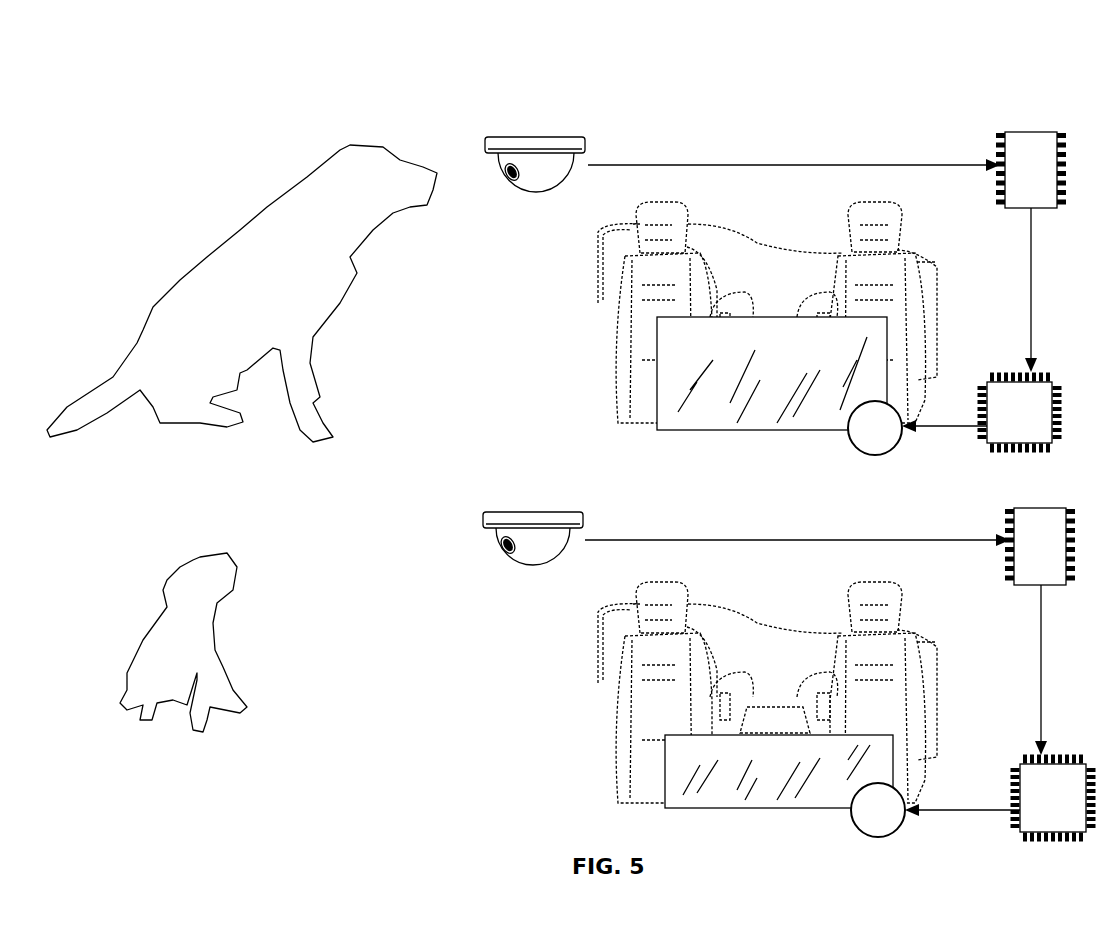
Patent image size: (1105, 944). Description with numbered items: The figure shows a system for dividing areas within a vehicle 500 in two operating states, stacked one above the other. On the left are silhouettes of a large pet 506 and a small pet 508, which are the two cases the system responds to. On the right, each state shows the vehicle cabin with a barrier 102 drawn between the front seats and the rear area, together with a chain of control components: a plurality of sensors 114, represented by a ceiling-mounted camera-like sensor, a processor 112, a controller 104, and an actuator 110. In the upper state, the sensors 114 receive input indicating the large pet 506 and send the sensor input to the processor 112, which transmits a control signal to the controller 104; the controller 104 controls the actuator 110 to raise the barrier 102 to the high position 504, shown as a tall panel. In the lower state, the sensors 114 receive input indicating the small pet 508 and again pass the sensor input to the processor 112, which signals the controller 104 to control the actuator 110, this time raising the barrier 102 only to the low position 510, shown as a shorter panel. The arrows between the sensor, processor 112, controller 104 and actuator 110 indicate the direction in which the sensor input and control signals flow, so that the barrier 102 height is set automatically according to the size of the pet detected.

The system for dividing areas within a vehicle 500 is at (900, 84).
The large pet 506 is at (322, 454).
The small pet 508 is at (229, 757).
The plurality of sensors 114 is at (535, 193).
The processor 112 is at (1046, 181).
The controller 104 is at (1035, 422).
The actuator 110 is at (889, 438).
The barrier 102 is at (767, 505).
The high position 504 is at (790, 361).
The low position 510 is at (790, 788).